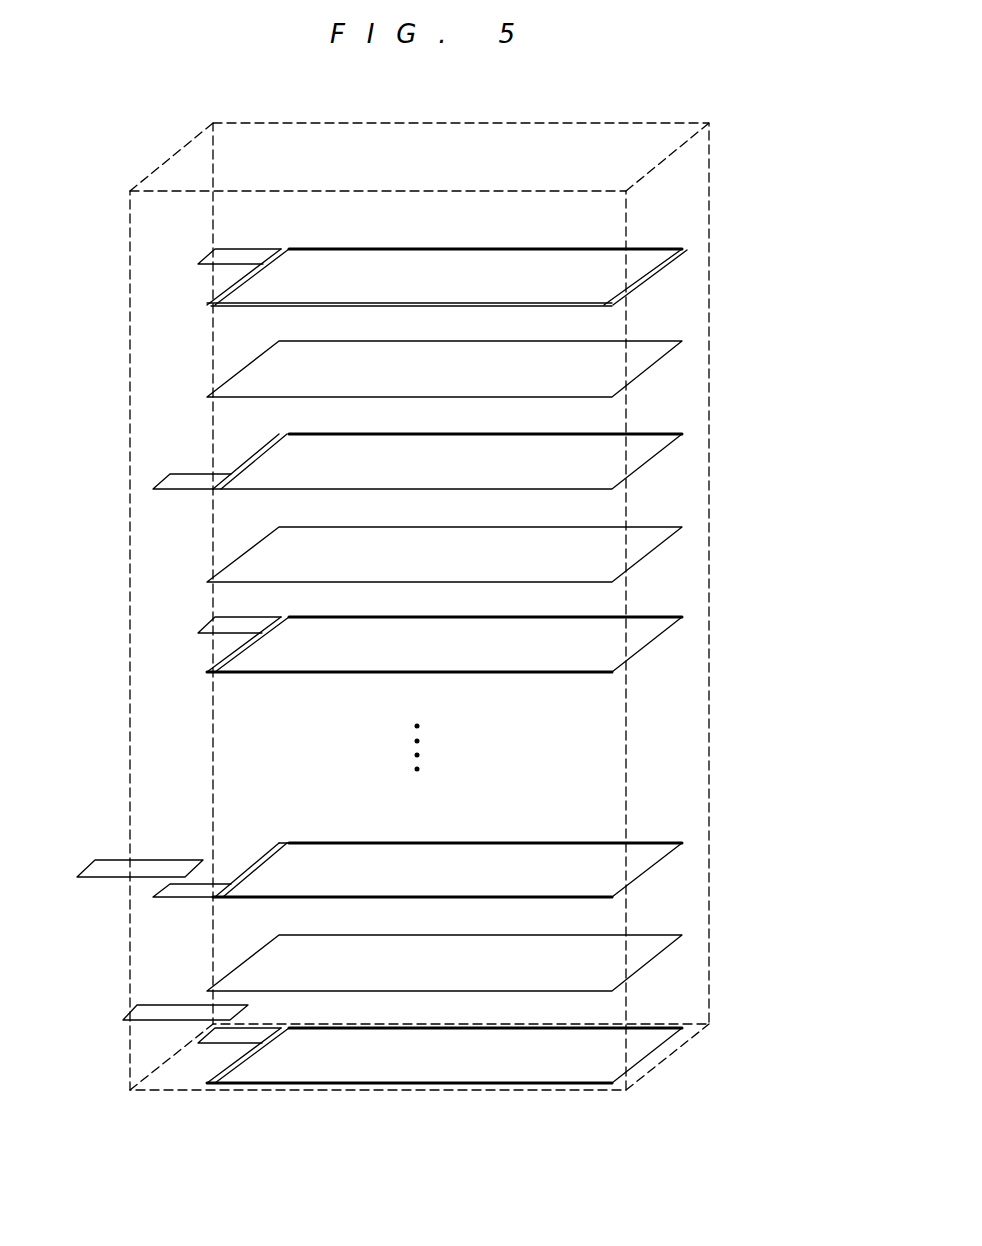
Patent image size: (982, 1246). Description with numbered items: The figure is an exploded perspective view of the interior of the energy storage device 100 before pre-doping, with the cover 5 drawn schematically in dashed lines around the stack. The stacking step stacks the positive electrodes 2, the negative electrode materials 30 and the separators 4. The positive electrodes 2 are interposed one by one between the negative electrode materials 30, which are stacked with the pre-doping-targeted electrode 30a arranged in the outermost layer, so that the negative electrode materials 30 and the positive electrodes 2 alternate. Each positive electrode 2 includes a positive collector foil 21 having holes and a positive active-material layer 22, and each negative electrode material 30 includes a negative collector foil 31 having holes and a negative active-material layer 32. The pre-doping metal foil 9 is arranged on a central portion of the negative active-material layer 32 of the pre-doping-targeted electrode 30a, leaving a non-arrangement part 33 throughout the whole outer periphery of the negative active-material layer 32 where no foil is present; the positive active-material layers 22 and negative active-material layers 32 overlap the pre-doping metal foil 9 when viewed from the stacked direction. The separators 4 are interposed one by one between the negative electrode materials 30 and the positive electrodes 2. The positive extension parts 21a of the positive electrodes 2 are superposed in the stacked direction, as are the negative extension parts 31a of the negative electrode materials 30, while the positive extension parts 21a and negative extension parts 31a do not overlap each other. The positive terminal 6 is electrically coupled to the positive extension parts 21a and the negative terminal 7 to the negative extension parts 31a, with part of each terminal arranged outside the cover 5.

The cover 5 is at (528, 123).
The energy storage device 100 is at (732, 157).
The pre-doping metal foil 9 is at (400, 260).
The negative extension part 31a is at (222, 257).
The negative collector foil 31 is at (210, 302).
The pre-doping-targeted electrode 30a is at (436, 430).
The negative electrode material 30 is at (424, 835).
The non-arrangement part 33 is at (617, 293).
The negative active-material layer 32 is at (612, 655).
The separator 4 is at (672, 363).
The positive electrode 2 is at (414, 641).
The positive collector foil 21 is at (262, 446).
The positive extension part 21a is at (193, 479).
The positive active-material layer 22 is at (610, 468).
The positive terminal 6 is at (103, 867).
The negative terminal 7 is at (158, 1010).